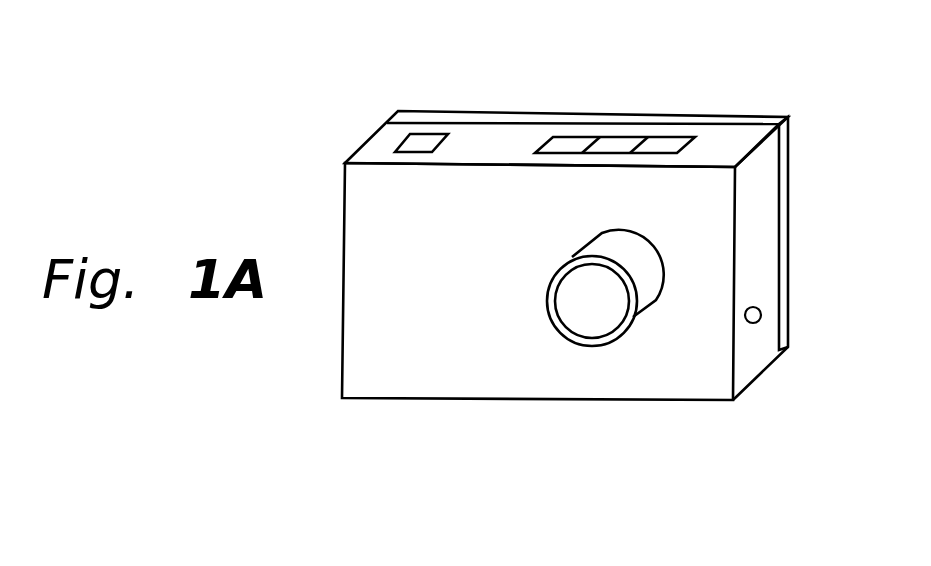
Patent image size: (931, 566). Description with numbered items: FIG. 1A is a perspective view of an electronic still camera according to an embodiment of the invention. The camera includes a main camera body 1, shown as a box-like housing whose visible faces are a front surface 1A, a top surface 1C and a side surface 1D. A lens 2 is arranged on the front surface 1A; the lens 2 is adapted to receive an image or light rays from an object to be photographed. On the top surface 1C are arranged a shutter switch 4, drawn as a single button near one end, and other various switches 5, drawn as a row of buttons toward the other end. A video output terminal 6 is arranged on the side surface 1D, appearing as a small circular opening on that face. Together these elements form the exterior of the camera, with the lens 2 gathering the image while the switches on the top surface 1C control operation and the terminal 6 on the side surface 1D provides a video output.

The main camera body 1 is at (593, 76).
The front surface 1A is at (430, 365).
The top surface 1C is at (493, 137).
The side surface 1D is at (757, 252).
The lens 2 is at (592, 327).
The shutter switch 4 is at (422, 142).
The various switches 5 is at (635, 143).
The video output terminal 6 is at (761, 315).